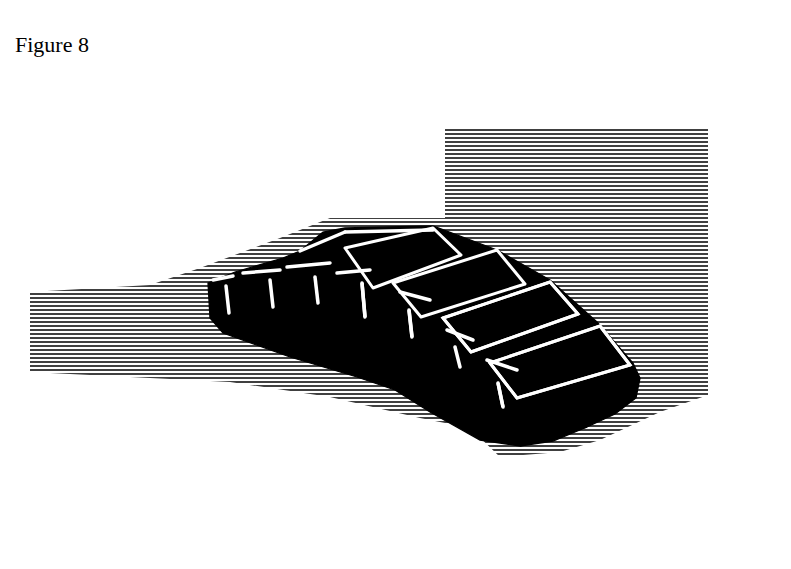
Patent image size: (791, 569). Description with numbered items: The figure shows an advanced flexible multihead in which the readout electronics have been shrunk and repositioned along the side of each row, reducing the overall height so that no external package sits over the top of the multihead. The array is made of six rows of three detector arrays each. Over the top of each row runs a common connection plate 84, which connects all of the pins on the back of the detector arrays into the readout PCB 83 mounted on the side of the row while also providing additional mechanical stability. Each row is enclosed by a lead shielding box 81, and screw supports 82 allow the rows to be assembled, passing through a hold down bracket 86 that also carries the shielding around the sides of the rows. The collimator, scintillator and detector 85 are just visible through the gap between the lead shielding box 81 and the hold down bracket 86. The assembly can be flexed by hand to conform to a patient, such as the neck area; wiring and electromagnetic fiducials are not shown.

The lead shielding box 81 is at (383, 375).
The screw support 82 is at (420, 390).
The readout PCB 83 is at (493, 430).
The common connection plate 84 is at (567, 297).
The collimator, scintillator and detector 85 is at (607, 412).
The hold down bracket 86 is at (555, 430).